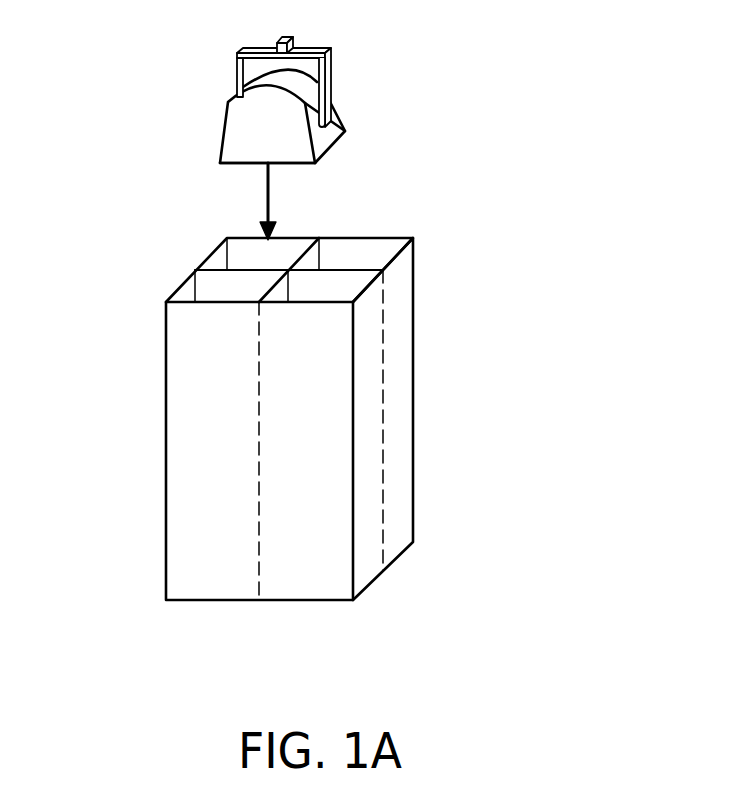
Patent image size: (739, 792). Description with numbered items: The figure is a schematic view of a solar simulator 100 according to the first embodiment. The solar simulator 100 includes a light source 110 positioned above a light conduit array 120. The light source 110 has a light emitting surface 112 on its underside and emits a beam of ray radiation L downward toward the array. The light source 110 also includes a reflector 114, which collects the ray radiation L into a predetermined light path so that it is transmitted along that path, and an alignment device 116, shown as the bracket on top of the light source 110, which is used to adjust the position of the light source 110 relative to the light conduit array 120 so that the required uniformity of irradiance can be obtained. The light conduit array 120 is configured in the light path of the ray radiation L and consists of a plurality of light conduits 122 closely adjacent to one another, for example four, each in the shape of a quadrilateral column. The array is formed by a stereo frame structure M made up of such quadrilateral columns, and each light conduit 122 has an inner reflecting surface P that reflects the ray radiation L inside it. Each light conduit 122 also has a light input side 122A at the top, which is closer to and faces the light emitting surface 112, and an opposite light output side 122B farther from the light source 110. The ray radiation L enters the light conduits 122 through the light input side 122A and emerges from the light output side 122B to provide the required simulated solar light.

The solar simulator 100 is at (352, 306).
The light source 110 is at (309, 99).
The light emitting surface 112 is at (237, 165).
The reflector 114 is at (273, 82).
The alignment device 116 is at (322, 82).
The ray radiation L is at (270, 208).
The light conduit array 120 is at (310, 369).
The light conduit 122 is at (362, 366).
The light input side 122A is at (405, 268).
The light output side 122B is at (407, 550).
The inner reflecting surface P is at (348, 273).
The stereo frame structure M is at (413, 398).